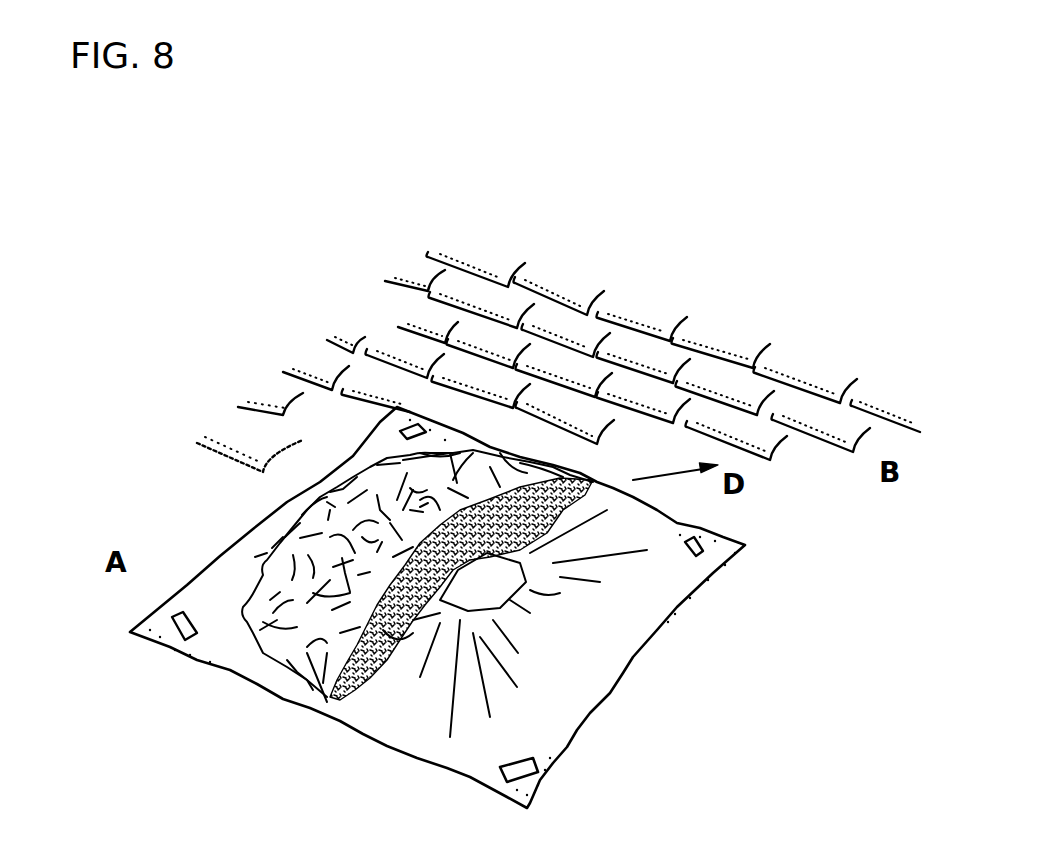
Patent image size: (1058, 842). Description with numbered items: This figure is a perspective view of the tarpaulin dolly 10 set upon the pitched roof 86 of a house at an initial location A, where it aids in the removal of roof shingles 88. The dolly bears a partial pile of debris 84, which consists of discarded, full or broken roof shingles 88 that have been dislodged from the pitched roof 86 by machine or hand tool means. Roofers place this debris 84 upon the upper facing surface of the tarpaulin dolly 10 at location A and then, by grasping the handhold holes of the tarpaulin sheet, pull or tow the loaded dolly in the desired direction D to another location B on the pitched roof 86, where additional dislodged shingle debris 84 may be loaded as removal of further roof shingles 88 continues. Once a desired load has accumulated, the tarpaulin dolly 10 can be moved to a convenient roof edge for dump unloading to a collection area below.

The tarpaulin dolly 10 is at (618, 714).
The pile of debris 84 is at (287, 617).
The pitched roof 86 is at (274, 432).
The roof shingles 88 is at (448, 305).